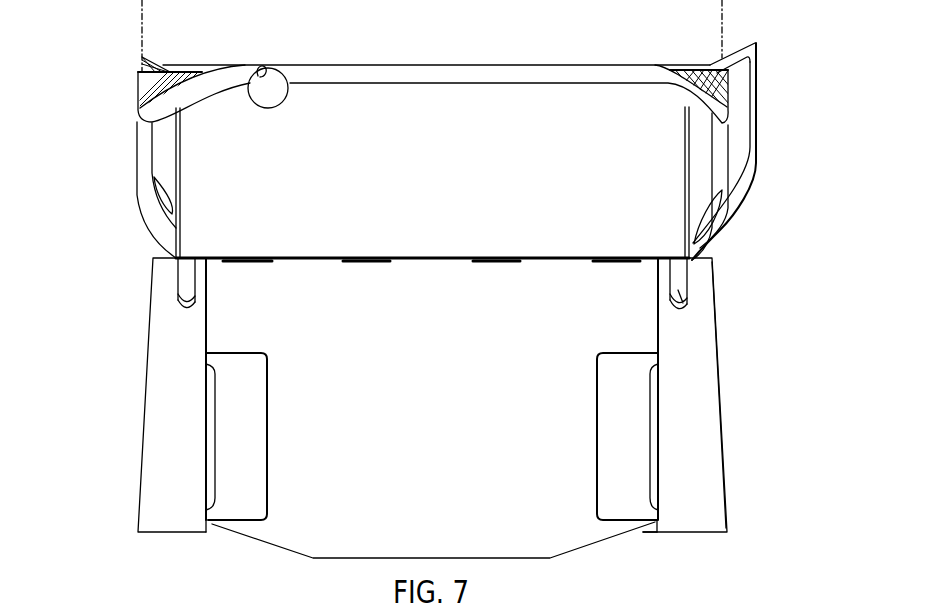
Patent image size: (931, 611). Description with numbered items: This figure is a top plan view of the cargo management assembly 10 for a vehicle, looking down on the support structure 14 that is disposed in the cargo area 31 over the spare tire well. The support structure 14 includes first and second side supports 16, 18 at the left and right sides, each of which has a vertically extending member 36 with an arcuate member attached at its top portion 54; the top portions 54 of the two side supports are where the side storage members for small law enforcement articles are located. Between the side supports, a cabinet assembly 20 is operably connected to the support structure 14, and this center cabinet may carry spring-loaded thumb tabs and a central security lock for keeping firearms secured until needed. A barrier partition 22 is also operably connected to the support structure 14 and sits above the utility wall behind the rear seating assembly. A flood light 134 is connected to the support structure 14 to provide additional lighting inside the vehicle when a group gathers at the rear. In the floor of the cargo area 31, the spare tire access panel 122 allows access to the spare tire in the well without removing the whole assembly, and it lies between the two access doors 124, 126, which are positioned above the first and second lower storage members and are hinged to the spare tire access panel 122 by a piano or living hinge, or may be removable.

The cargo management assembly 10 is at (100, 240).
The support structure 14 is at (137, 80).
The first side support 16 is at (177, 277).
The second side support 18 is at (687, 283).
The cabinet assembly 20 is at (632, 193).
The barrier partition 22 is at (727, 83).
The cargo area 31 is at (451, 378).
The vertically extending member 36 is at (187, 287).
The top portion 54 is at (177, 163).
The spare tire access panel 122 is at (553, 425).
The access door 124 is at (248, 443).
The access door 126 is at (623, 453).
The flood light 134 is at (272, 97).